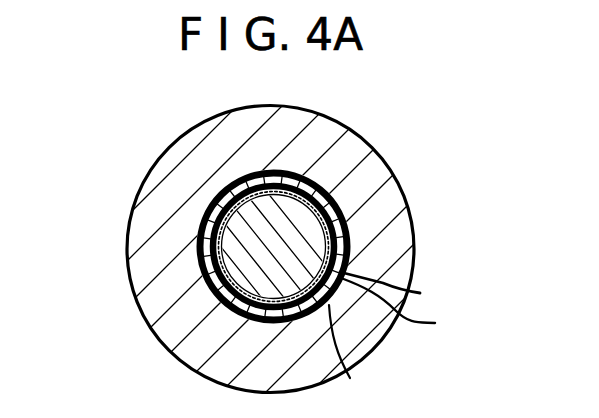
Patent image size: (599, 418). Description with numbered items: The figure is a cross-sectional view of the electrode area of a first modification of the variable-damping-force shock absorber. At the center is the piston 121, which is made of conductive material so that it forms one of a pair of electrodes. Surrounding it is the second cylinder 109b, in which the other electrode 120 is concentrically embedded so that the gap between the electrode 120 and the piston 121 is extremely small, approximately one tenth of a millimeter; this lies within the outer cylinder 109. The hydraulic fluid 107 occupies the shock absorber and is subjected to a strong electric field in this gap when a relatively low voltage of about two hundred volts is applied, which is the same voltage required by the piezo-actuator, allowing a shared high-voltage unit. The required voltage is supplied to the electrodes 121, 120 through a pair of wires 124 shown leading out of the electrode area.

The hydraulic fluid 107 is at (146, 313).
The cylinder 109 is at (397, 220).
The second cylinder 109b is at (350, 378).
The electrode 120 is at (413, 319).
The piston 121 is at (287, 214).
The wires 124 is at (420, 293).